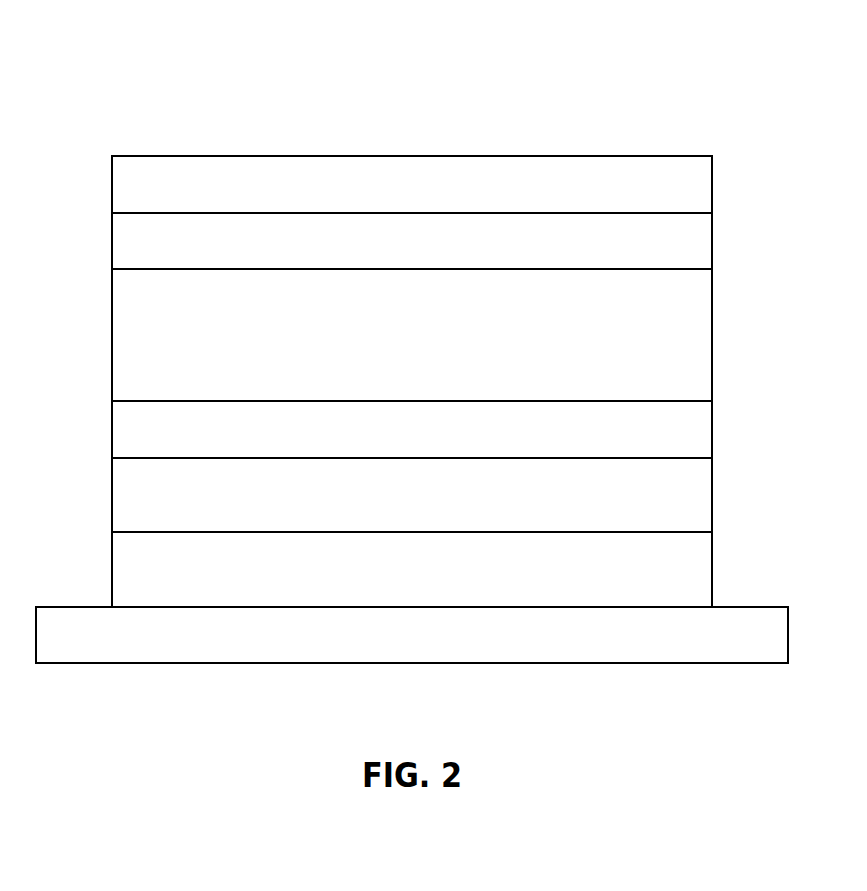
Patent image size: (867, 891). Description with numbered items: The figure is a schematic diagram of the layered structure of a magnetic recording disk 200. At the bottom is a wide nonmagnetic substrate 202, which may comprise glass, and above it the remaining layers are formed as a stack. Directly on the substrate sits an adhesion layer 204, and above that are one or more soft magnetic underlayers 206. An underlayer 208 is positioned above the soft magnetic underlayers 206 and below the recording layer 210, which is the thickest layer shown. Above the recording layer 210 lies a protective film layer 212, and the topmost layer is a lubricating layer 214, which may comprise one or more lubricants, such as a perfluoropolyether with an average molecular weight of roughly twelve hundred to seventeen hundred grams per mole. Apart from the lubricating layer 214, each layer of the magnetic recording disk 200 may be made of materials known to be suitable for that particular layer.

The magnetic recording disk 200 is at (208, 99).
The nonmagnetic substrate 202 is at (392, 646).
The adhesion layer 204 is at (392, 580).
The soft magnetic underlayers 206 is at (392, 506).
The underlayer 208 is at (392, 438).
The recording layer 210 is at (392, 346).
The protective film layer 212 is at (392, 252).
The lubricating layer 214 is at (392, 196).